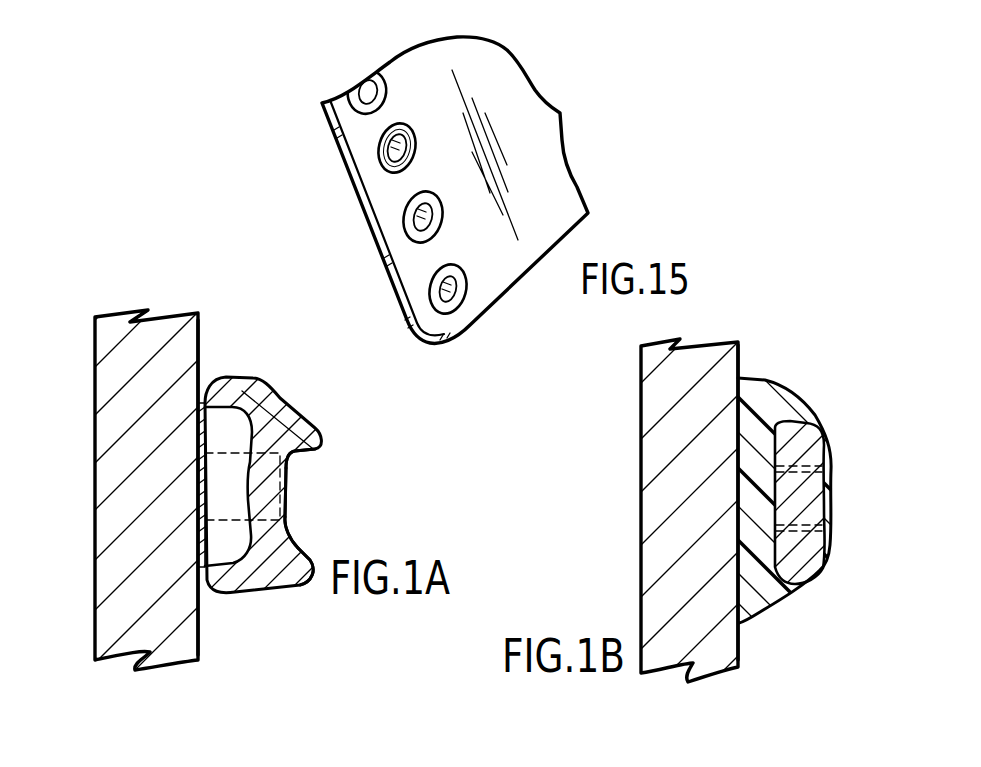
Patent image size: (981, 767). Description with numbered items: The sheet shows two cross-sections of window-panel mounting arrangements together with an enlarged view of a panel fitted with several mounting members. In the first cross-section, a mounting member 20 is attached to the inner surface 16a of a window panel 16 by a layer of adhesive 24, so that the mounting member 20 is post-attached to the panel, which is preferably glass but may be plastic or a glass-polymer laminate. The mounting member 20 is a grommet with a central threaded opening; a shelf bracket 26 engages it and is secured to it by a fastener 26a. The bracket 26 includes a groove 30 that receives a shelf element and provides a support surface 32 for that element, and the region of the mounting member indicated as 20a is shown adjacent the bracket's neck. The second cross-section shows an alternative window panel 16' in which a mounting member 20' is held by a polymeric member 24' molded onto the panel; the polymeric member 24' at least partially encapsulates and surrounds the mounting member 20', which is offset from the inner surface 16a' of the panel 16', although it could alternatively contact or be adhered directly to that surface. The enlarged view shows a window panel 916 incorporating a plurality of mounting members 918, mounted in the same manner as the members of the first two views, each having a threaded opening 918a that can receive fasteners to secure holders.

In FIG. 1A, the window panel 16 is at (277, 475).
In FIG. 1A, the inner surface 16a is at (198, 459).
In FIG. 1A, the mounting member 20 is at (245, 430).
In FIG. 1A, the clip neck portion 20a is at (290, 470).
In FIG. 1A, the layer of adhesive 24 is at (226, 536).
In FIG. 1A, the shelf bracket 26 is at (289, 389).
In FIG. 1A, the fastener 26a is at (272, 520).
In FIG. 1A, the groove 30 is at (290, 505).
In FIG. 1A, the support surface 32 is at (300, 547).
In FIG. 1B, the window panel 16' is at (625, 500).
In FIG. 1B, the inner surface 16a' is at (777, 468).
In FIG. 1B, the polymeric member 24' is at (743, 468).
In FIG. 1B, the mounting member 20' is at (810, 471).
In FIG. 15, the window panel 916 is at (557, 202).
In FIG. 15, the mounting members 918 is at (463, 300).
In FIG. 15, the threaded openings 918a is at (415, 137).